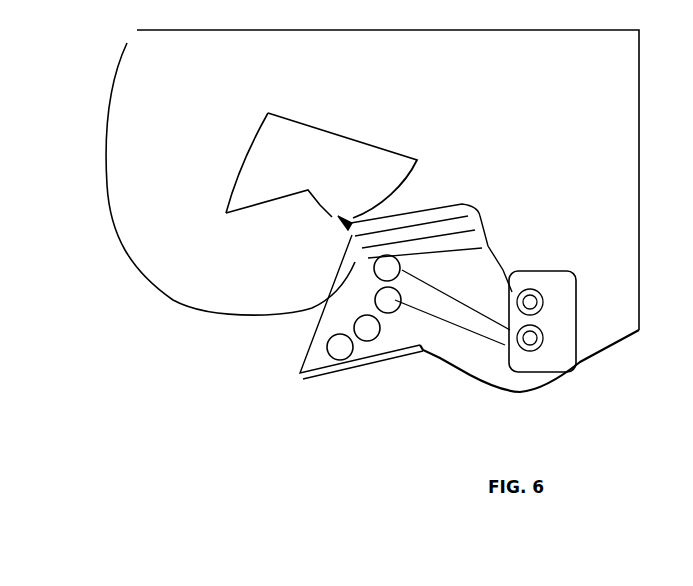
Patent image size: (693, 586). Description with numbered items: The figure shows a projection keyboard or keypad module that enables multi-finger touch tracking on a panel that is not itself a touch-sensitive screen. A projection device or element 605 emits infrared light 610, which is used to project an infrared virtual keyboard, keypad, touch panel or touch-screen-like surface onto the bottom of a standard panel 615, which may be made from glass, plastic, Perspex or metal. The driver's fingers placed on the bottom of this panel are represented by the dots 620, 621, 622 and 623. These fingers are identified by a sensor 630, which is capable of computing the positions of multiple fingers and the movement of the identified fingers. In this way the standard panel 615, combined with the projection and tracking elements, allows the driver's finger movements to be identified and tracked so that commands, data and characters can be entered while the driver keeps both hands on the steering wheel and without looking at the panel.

The projection device 605 is at (567, 340).
The infrared light 610 is at (526, 305).
The standard panel 615 is at (377, 218).
The dot 620 is at (372, 274).
The dot 621 is at (374, 303).
The dot 622 is at (353, 329).
The dot 623 is at (326, 350).
The sensor 630 is at (527, 340).